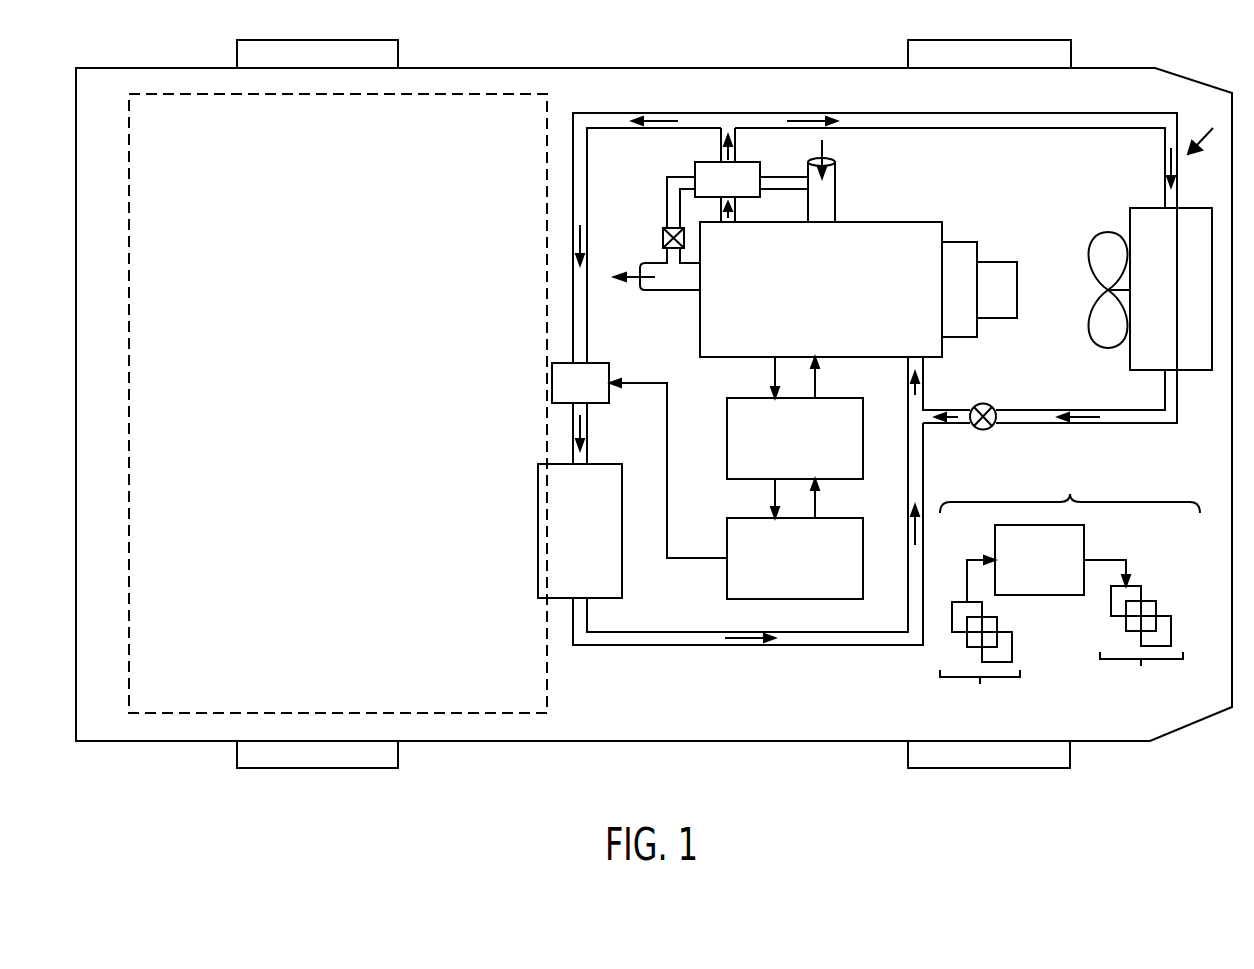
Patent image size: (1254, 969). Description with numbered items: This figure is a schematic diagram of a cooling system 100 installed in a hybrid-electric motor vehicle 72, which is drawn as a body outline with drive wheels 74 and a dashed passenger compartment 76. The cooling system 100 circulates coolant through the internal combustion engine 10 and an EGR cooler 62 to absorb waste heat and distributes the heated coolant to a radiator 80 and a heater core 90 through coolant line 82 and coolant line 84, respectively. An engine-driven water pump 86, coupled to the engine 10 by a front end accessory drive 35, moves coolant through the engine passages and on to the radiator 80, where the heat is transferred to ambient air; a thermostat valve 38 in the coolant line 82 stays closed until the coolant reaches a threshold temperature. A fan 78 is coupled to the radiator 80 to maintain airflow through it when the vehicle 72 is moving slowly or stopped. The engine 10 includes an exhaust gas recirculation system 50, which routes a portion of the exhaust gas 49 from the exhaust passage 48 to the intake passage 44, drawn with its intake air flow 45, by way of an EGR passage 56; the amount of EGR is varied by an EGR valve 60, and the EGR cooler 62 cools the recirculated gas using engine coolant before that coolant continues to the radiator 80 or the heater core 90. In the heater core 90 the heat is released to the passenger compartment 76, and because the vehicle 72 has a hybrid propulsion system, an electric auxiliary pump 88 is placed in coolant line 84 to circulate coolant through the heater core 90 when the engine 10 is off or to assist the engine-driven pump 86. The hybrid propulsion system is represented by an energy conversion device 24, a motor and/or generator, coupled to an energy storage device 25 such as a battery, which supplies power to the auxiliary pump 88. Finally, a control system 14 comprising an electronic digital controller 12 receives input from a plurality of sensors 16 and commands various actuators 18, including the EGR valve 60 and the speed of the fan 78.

The internal combustion engine 10 is at (821, 289).
The electronic digital controller 12 is at (1039, 560).
The control system 14 is at (1070, 480).
The sensors 16 is at (980, 644).
The actuators 18 is at (1141, 636).
The energy conversion device 24 is at (795, 418).
The energy storage device 25 is at (736, 489).
The front end accessory drive 35 is at (958, 242).
The thermostat valve 38 is at (990, 405).
The intake passage 44 is at (838, 202).
The intake air flow 45 is at (826, 158).
The exhaust passage 48 is at (677, 291).
The exhaust gas 49 is at (637, 277).
The exhaust gas recirculation system 50 is at (650, 180).
The EGR passage 56 is at (768, 176).
The EGR valve 60 is at (663, 238).
The EGR cooler 62 is at (727, 175).
The motor vehicle 72 is at (582, 68).
The drive wheels 74 is at (318, 40).
The passenger compartment 76 is at (338, 403).
The fan 78 is at (1096, 253).
The radiator 80 is at (1171, 289).
The coolant line 82 is at (990, 113).
The coolant line 84 is at (656, 113).
The engine-driven water pump 86 is at (997, 290).
The electric auxiliary pump 88 is at (580, 383).
The heater core 90 is at (580, 531).
The cooling system 100 is at (1207, 130).